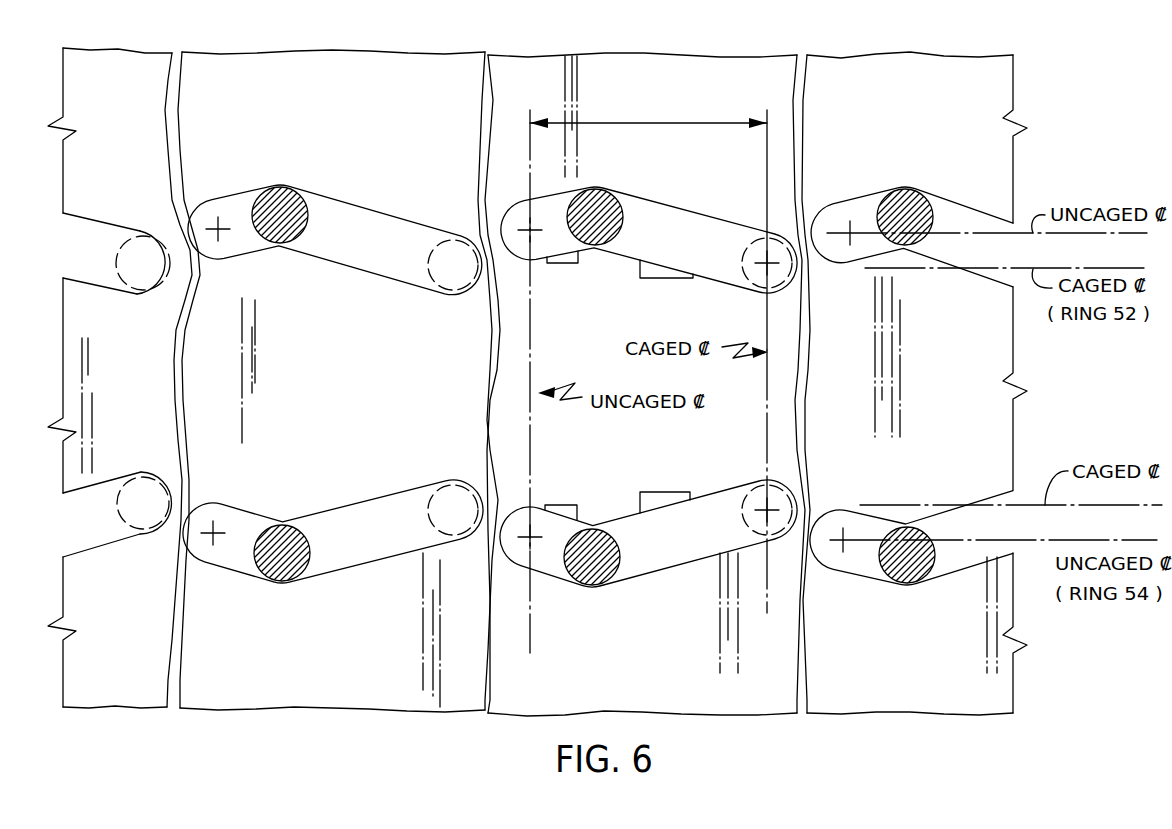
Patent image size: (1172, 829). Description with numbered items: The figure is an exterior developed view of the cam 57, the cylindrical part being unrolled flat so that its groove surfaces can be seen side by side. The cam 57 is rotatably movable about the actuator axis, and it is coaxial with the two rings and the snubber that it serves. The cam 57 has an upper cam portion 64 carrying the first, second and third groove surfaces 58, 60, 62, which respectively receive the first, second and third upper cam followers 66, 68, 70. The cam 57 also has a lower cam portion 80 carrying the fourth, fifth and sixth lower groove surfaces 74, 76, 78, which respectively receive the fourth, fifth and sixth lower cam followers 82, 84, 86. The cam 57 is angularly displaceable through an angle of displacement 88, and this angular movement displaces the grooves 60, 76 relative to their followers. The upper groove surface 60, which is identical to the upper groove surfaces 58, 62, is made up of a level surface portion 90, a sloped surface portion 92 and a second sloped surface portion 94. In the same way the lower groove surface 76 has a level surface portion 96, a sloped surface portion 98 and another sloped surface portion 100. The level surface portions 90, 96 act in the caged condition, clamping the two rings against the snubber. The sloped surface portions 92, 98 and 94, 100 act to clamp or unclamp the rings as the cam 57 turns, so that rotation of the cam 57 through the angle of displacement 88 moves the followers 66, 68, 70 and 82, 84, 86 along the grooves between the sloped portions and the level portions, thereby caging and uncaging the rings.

The cam 57 is at (982, 93).
The first groove surface 58 is at (368, 238).
The second groove surface 60 is at (516, 224).
The third groove surface 62 is at (98, 237).
The upper cam portion 64 is at (80, 326).
The first upper cam follower 66 is at (296, 196).
The second upper cam follower 68 is at (598, 200).
The third upper cam follower 70 is at (916, 188).
The fourth lower groove surface 74 is at (377, 510).
The fifth lower groove surface 76 is at (656, 548).
The sixth lower groove surface 78 is at (93, 513).
The lower cam portion 80 is at (93, 673).
The fourth lower cam follower 82 is at (281, 565).
The fifth lower cam follower 84 is at (597, 570).
The sixth lower cam follower 86 is at (908, 540).
The angle of displacement 88 is at (630, 123).
The level surface portion 90 is at (782, 293).
The sloped surface portion 92 is at (652, 272).
The second sloped surface portion 94 is at (568, 264).
The level surface portion 96 is at (760, 478).
The sloped surface portion 98 is at (663, 500).
The another sloped surface portion 100 is at (568, 505).